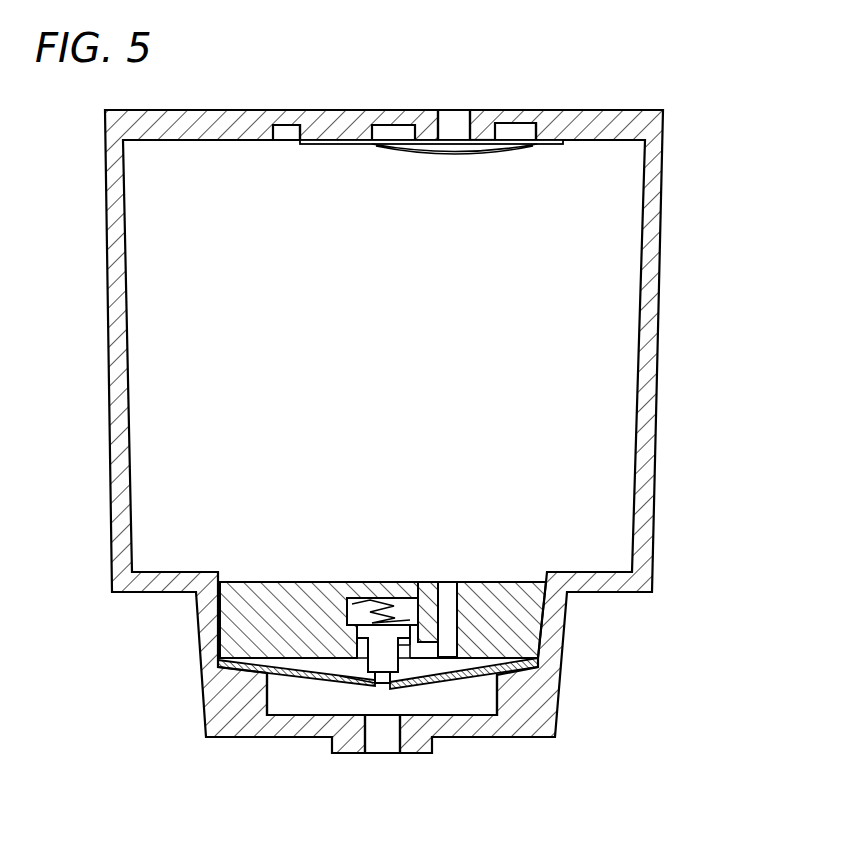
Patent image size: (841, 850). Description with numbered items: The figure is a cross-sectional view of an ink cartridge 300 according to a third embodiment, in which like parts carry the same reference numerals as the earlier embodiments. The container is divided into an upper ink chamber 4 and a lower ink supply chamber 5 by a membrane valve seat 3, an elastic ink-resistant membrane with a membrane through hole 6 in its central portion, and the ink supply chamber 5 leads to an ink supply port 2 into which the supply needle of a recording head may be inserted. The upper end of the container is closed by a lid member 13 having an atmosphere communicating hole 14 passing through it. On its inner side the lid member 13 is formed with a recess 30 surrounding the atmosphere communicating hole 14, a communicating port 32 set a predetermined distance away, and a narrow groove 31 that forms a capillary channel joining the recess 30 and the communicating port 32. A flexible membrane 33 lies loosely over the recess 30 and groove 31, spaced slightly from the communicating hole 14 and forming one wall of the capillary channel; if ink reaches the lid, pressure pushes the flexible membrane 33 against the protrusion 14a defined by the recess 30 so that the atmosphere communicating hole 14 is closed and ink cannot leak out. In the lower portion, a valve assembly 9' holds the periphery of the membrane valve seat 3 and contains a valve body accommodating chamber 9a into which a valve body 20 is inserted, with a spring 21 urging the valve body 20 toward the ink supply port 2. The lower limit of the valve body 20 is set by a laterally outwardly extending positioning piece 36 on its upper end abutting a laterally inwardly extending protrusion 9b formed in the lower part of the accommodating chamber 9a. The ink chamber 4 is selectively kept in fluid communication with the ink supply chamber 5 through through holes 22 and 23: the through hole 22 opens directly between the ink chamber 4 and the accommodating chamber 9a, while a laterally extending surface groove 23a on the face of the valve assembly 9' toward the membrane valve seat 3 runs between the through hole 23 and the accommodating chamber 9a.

The ink chamber 4 is at (610, 355).
The ink cartridge 300 is at (674, 417).
The lid member 13 is at (330, 110).
The atmosphere communicating hole 14 is at (455, 122).
The protrusion 14a is at (480, 141).
The recess 30 is at (510, 128).
The communicating port 32 is at (282, 141).
The narrow groove 31 is at (317, 145).
The flexible membrane 33 is at (413, 151).
The protrusion 9b is at (350, 617).
The valve body accommodating chamber 9a is at (357, 600).
The spring 21 is at (385, 598).
The through hole 22 is at (410, 595).
The through hole 23 is at (447, 582).
The surface groove 23a is at (433, 648).
The valve assembly 9' is at (415, 620).
The membrane valve seat 3 is at (303, 678).
The membrane through hole 6 is at (380, 688).
The valve body 20 is at (348, 684).
The positioning piece 36 is at (405, 643).
The ink supply chamber 5 is at (486, 685).
The ink supply port 2 is at (390, 743).